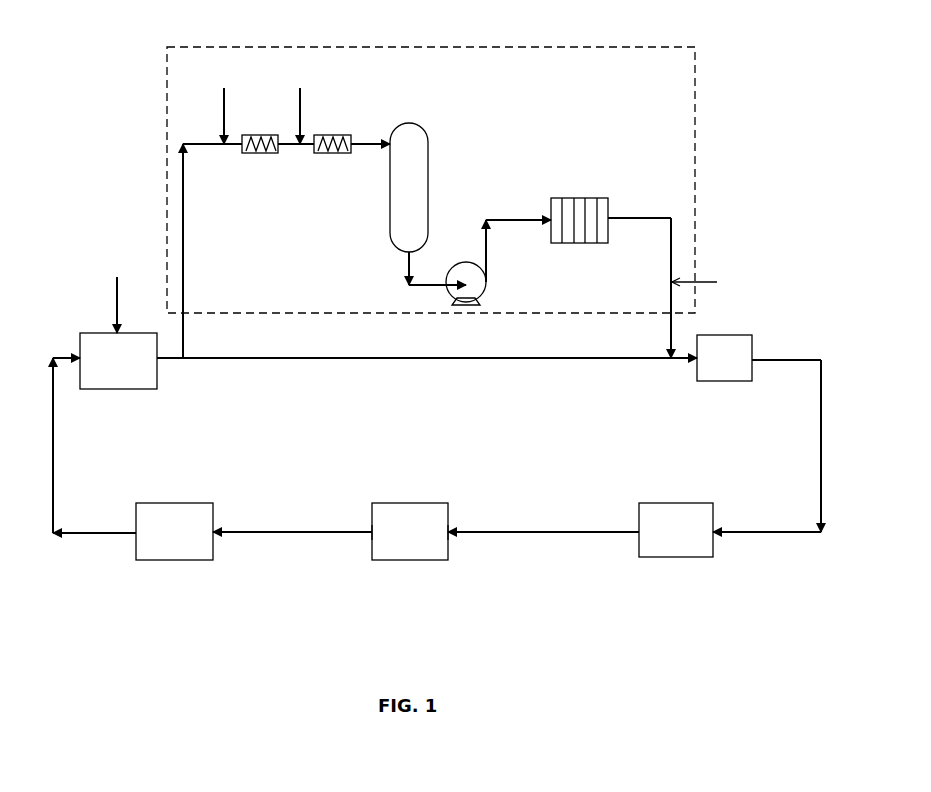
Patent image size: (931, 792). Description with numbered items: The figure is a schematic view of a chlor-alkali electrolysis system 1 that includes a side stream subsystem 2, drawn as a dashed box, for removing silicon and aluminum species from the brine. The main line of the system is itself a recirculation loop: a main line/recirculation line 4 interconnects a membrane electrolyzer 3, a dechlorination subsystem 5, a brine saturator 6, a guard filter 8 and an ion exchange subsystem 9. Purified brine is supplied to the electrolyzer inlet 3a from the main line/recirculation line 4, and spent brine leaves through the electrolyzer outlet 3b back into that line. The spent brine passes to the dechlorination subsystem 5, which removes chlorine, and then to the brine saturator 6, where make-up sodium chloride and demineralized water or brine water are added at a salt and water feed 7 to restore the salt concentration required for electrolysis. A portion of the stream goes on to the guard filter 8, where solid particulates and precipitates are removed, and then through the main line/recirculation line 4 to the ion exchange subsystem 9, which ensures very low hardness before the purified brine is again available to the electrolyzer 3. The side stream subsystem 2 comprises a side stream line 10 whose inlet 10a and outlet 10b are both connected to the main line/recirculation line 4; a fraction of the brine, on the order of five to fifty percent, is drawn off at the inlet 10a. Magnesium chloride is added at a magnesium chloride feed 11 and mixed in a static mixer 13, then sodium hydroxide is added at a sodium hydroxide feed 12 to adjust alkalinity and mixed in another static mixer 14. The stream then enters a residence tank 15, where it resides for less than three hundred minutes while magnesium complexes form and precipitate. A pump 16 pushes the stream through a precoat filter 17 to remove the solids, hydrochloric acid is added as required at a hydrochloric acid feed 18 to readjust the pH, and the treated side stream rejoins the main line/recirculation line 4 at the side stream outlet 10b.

The chlor-alkali electrolysis system 1 is at (113, 190).
The side stream subsystem 2 is at (700, 121).
The membrane electrolyzer 3 is at (410, 516).
The inlet 3a is at (448, 535).
The outlet 3b is at (372, 530).
The main line/recirculation line 4 is at (545, 360).
The dechlorination subsystem 5 is at (175, 513).
The brine saturator 6 is at (142, 378).
The salt and water feed 7 is at (113, 310).
The guard filter 8 is at (730, 352).
The ion exchange subsystem 9 is at (675, 515).
The side stream line 10 is at (183, 235).
The inlet 10a is at (190, 352).
The outlet 10b is at (668, 356).
The magnesium chloride feed 11 is at (223, 133).
The sodium hydroxide feed 12 is at (303, 123).
The static mixer 13 is at (270, 148).
The static mixer 14 is at (345, 148).
The residence tank 15 is at (408, 180).
The pump 16 is at (475, 281).
The precoat filter 17 is at (580, 212).
The hydrochloric acid feed 18 is at (700, 278).